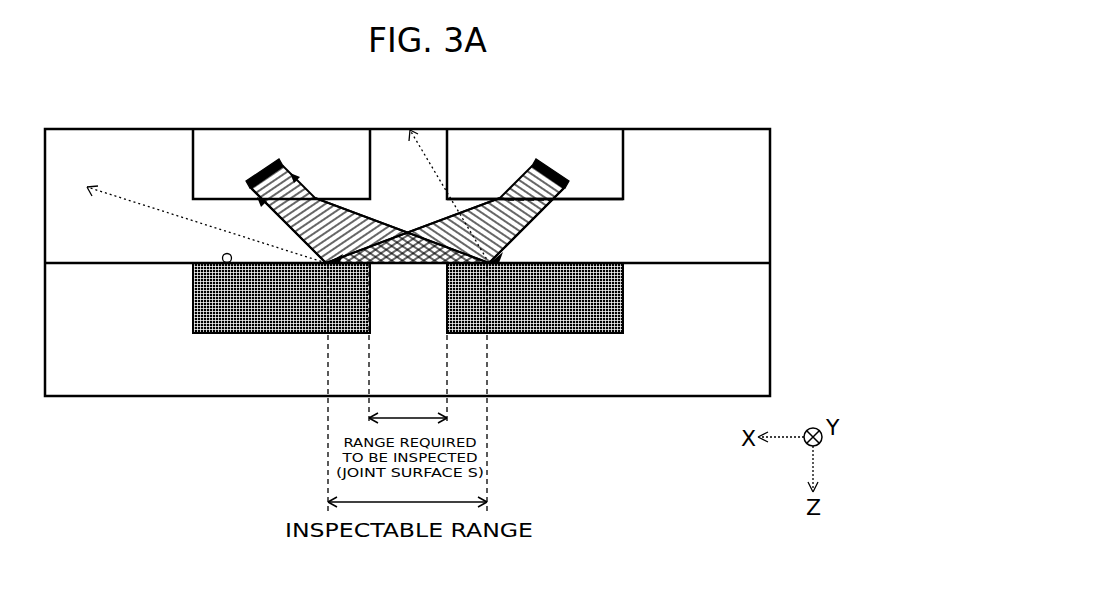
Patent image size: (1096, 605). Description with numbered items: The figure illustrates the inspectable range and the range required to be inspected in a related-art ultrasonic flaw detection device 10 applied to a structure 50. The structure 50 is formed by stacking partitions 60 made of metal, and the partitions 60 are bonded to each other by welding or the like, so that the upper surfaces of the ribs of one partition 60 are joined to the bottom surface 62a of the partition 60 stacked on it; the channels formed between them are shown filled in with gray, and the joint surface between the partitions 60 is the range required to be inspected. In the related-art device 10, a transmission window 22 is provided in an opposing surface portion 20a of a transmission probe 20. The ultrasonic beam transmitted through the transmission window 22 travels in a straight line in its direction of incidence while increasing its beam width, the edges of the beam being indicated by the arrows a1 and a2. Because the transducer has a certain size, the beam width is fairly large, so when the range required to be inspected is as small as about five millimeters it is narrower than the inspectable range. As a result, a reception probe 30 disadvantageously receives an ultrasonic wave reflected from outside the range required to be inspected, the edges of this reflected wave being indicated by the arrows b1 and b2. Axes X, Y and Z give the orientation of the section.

The related-art ultrasonic flaw detection device 10 is at (152, 85).
The transmission probe 20 is at (581, 138).
The opposing surface portion 20a is at (607, 199).
The transmission window 22 is at (552, 207).
The reception probe 30 is at (227, 138).
The structure 50 is at (845, 198).
The partition 60 is at (770, 195).
The bottom surface 62a is at (226, 263).
The arrow indicating edge of ultrasonic beam a1 is at (500, 250).
The arrow indicating edge of ultrasonic beam a2 is at (439, 222).
The arrow indicating edge of reflected ultrasonic wave b1 is at (281, 212).
The arrow indicating edge of reflected ultrasonic wave b2 is at (378, 221).